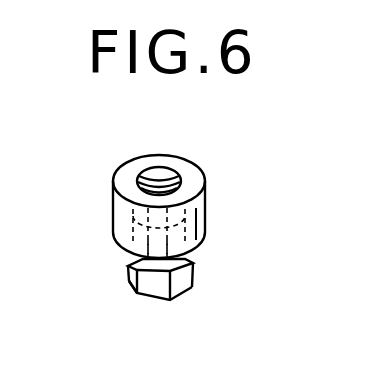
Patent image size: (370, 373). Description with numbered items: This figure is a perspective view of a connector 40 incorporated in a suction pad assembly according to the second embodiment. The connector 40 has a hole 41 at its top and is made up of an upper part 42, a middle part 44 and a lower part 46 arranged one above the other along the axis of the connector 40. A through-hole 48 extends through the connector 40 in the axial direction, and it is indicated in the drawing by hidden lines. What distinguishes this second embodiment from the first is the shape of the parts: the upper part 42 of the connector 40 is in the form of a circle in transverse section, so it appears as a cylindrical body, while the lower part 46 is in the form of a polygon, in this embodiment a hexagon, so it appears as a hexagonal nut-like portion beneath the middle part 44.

The connector 40 is at (172, 234).
The hole 41 is at (177, 172).
The upper part 42 is at (122, 210).
The middle part 44 is at (127, 260).
The lower part 46 is at (132, 283).
The through-hole 48 is at (175, 300).